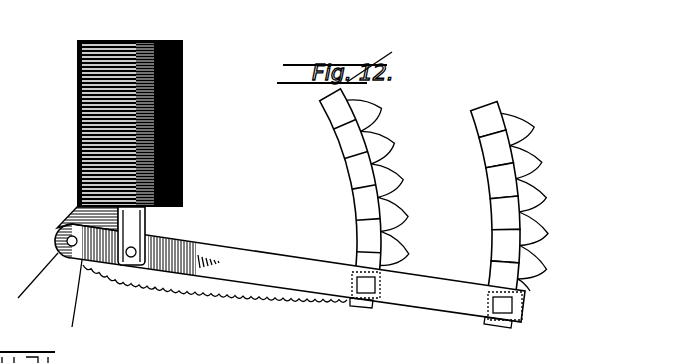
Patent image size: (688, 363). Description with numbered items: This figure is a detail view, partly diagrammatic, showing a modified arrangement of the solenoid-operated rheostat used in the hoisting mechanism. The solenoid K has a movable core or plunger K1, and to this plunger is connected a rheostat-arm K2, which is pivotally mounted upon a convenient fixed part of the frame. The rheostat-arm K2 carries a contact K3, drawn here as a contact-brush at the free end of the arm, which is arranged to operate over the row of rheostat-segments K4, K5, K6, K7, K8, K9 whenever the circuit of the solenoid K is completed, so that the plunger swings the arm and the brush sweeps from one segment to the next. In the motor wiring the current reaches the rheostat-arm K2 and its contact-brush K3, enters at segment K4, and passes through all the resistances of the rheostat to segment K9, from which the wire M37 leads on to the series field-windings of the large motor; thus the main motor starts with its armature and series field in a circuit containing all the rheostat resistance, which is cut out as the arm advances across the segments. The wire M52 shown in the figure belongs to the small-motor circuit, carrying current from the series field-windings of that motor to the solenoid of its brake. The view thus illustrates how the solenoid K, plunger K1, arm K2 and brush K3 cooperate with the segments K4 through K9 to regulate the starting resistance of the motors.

The solenoid K is at (176, 118).
The movable core or plunger K1 is at (170, 217).
The rheostat-arm K2 is at (272, 260).
The contact K3 is at (505, 307).
The rheostat-segment K4 is at (490, 327).
The rheostat-segment K5 is at (483, 246).
The rheostat-segment K6 is at (493, 215).
The rheostat-segment K7 is at (495, 180).
The rheostat-segment K8 is at (487, 152).
The rheostat-segment K9 is at (475, 120).
The wire M37 is at (545, 198).
The wire M52 is at (392, 268).